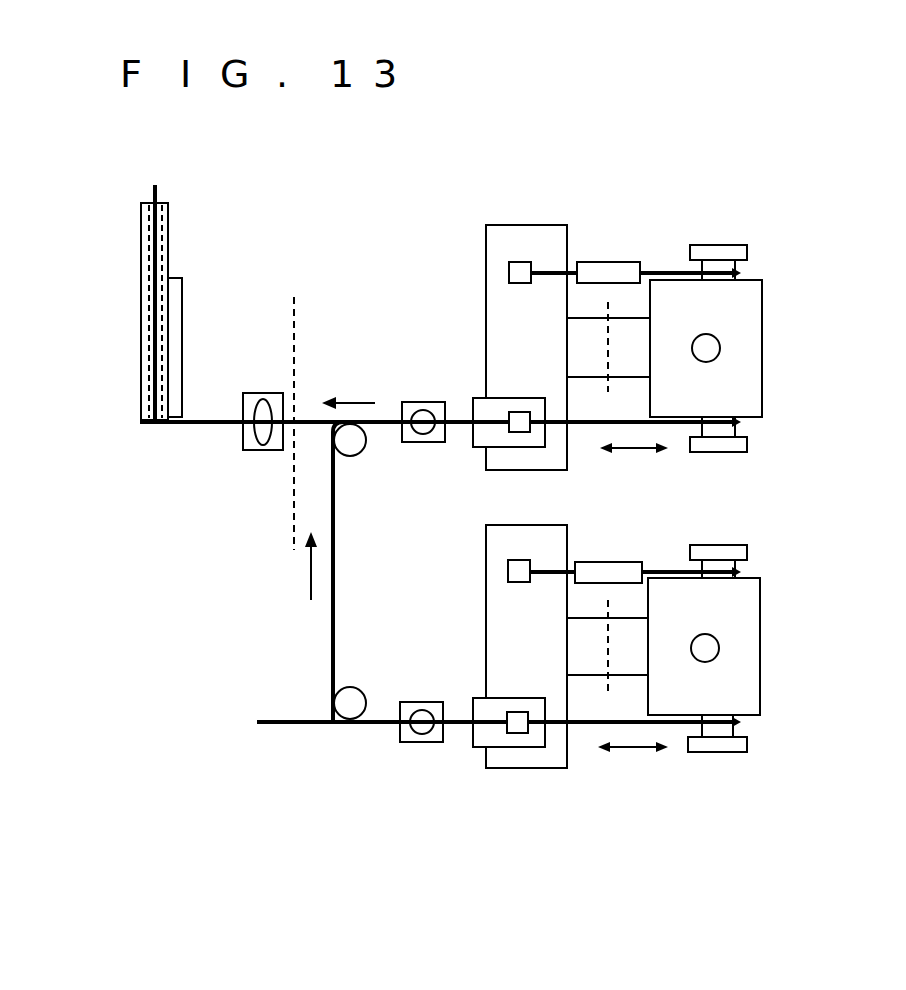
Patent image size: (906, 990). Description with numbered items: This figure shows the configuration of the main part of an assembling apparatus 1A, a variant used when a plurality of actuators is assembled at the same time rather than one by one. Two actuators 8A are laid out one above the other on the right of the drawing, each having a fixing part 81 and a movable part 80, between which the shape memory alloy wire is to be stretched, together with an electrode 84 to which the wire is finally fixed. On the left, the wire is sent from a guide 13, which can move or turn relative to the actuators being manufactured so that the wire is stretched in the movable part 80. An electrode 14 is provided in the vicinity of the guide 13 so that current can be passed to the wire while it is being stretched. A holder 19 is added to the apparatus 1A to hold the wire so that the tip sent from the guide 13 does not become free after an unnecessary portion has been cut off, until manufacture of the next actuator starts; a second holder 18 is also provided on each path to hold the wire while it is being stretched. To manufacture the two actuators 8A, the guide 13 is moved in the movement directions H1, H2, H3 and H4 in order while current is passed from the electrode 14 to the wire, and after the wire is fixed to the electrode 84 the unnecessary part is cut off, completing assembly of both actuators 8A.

The assembling apparatus 1A is at (78, 213).
The guide 13 is at (140, 264).
The electrode 14 is at (183, 305).
The holder 19 is at (263, 393).
The second holder 18 is at (423, 443).
The fixing part 81 is at (486, 283).
The electrode 84 is at (520, 448).
The movable part 80 is at (762, 333).
The actuator 8A is at (672, 232).
The movement direction H1 is at (632, 750).
The movement direction H2 is at (310, 569).
The movement direction H3 is at (632, 452).
The movement direction H4 is at (347, 398).